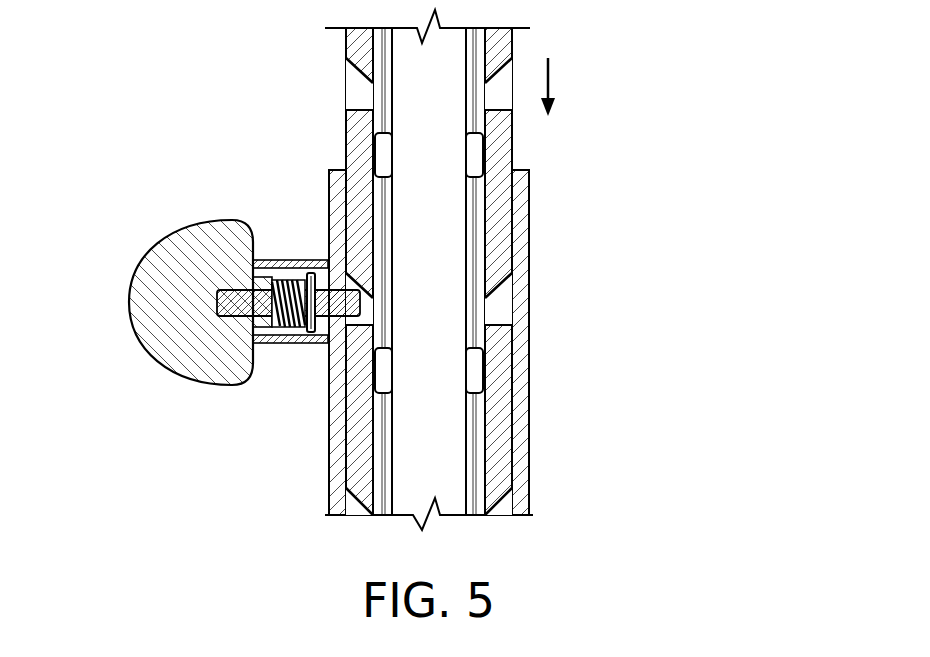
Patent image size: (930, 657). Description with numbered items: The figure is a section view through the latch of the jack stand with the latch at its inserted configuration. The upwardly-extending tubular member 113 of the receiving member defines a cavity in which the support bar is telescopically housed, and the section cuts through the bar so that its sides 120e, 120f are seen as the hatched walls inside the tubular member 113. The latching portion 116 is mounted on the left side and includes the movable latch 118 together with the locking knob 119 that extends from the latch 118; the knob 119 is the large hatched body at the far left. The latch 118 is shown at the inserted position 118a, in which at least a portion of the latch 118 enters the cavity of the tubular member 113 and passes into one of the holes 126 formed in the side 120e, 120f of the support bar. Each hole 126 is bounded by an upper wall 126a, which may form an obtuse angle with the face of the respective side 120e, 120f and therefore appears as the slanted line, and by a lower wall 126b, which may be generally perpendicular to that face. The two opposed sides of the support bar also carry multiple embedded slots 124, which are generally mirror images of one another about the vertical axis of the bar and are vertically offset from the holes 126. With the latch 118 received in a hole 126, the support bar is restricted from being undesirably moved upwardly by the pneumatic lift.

The tubular member 113 is at (529, 292).
The latching portion 116 is at (201, 291).
The latch 118 is at (338, 302).
The inserted position 118a is at (318, 316).
The locking knob 119 is at (150, 322).
The side of the support bar 120e is at (300, 114).
The side of the support bar 120f is at (536, 34).
The slots 124 is at (382, 155).
The holes 126 is at (362, 90).
The upper wall 126a is at (350, 72).
The lower wall 126b is at (502, 114).